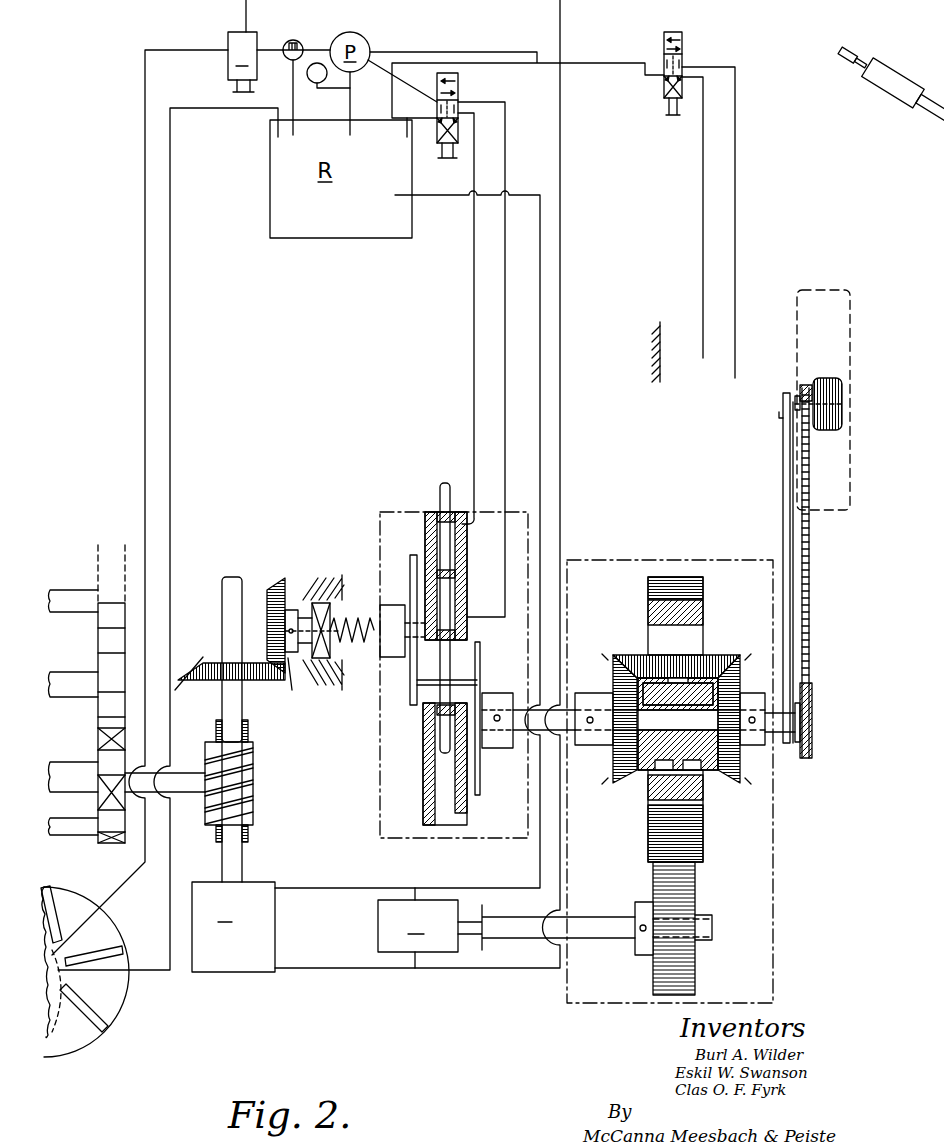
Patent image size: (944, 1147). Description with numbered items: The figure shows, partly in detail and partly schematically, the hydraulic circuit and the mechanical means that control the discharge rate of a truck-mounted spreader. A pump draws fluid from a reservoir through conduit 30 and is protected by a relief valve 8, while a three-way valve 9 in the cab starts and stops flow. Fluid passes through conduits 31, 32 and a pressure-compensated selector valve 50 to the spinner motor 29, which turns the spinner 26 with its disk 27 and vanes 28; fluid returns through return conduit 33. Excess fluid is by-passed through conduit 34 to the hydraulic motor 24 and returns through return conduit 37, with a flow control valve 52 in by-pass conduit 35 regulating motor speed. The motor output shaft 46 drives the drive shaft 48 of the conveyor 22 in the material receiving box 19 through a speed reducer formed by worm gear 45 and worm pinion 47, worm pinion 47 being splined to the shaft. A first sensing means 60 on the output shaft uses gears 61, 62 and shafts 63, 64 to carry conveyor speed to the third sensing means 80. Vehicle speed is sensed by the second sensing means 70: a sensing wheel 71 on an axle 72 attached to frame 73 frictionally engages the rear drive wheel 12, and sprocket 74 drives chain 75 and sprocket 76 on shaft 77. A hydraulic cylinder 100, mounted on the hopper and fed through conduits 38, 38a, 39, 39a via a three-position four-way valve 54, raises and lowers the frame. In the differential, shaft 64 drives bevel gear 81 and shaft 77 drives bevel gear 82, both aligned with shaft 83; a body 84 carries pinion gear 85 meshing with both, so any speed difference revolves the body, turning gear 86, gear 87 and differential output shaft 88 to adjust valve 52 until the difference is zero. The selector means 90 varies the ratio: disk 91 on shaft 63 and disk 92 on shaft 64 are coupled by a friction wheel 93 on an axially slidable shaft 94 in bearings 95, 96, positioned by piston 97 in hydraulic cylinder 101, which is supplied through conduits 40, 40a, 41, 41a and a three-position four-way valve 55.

The relief valve 8 is at (308, 83).
The three-way valve 9 is at (296, 41).
The rear drive wheel 12 is at (809, 290).
The material receiving box 19 is at (663, 322).
The conveyor 22 is at (98, 623).
The hydraulic motor 24 is at (233, 927).
The spinner 26 is at (127, 1000).
The disk 27 is at (104, 998).
The vanes 28 is at (95, 1040).
The spinner motor 29 is at (65, 997).
The conduit 30 is at (350, 97).
The conduit 31 is at (269, 49).
The conduit 32 is at (145, 196).
The return conduit 33 is at (170, 215).
The conduit 34 is at (560, 255).
The by-pass conduit 35 is at (415, 892).
The return conduit 37 is at (540, 316).
The conduit 38 is at (606, 36).
The conduit 38a is at (735, 135).
The conduit 39 is at (577, 68).
The conduit 39a is at (703, 163).
The conduit 40 is at (437, 80).
The conduit 40a is at (505, 158).
The conduit 41 is at (415, 118).
The conduit 41a is at (474, 258).
The worm gear 45 is at (253, 780).
The output shaft 46 is at (242, 862).
The worm pinion 47 is at (248, 832).
The drive shaft 48 is at (180, 773).
The selector valve 50 is at (242, 62).
The flow control valve 52 is at (418, 926).
The three-position four-way valve 54 is at (684, 42).
The three-position four-way valve 55 is at (458, 83).
The first sensing means 60 is at (232, 576).
The gear 61 is at (262, 682).
The gear 62 is at (272, 599).
The shaft 63 is at (345, 655).
The shaft 64 is at (548, 722).
The second sensing means 70 is at (777, 446).
The sensing wheel 71 is at (828, 378).
The axle 72 is at (795, 396).
The frame 73 is at (783, 478).
The sprocket 74 is at (805, 385).
The chain 75 is at (809, 600).
The sprocket 76 is at (812, 700).
The shaft 77 is at (787, 745).
The third sensing means 80 is at (715, 555).
The bevel gear 81 is at (626, 783).
The bevel gear 82 is at (735, 783).
The shaft 83 is at (678, 724).
The body 84 is at (678, 694).
The pinion gear 85 is at (722, 655).
The gear 86 is at (703, 840).
The gear 87 is at (695, 890).
The differential output shaft 88 is at (712, 935).
The selector means 90 is at (403, 504).
The disk 91 is at (395, 657).
The disk 92 is at (490, 748).
The friction wheel 93 is at (465, 682).
The shaft 94 is at (450, 660).
The bearing 95 is at (423, 726).
The bearing 96 is at (467, 640).
The piston 97 is at (462, 575).
The hydraulic cylinder 100 is at (712, 398).
The hydraulic cylinder 101 is at (425, 540).